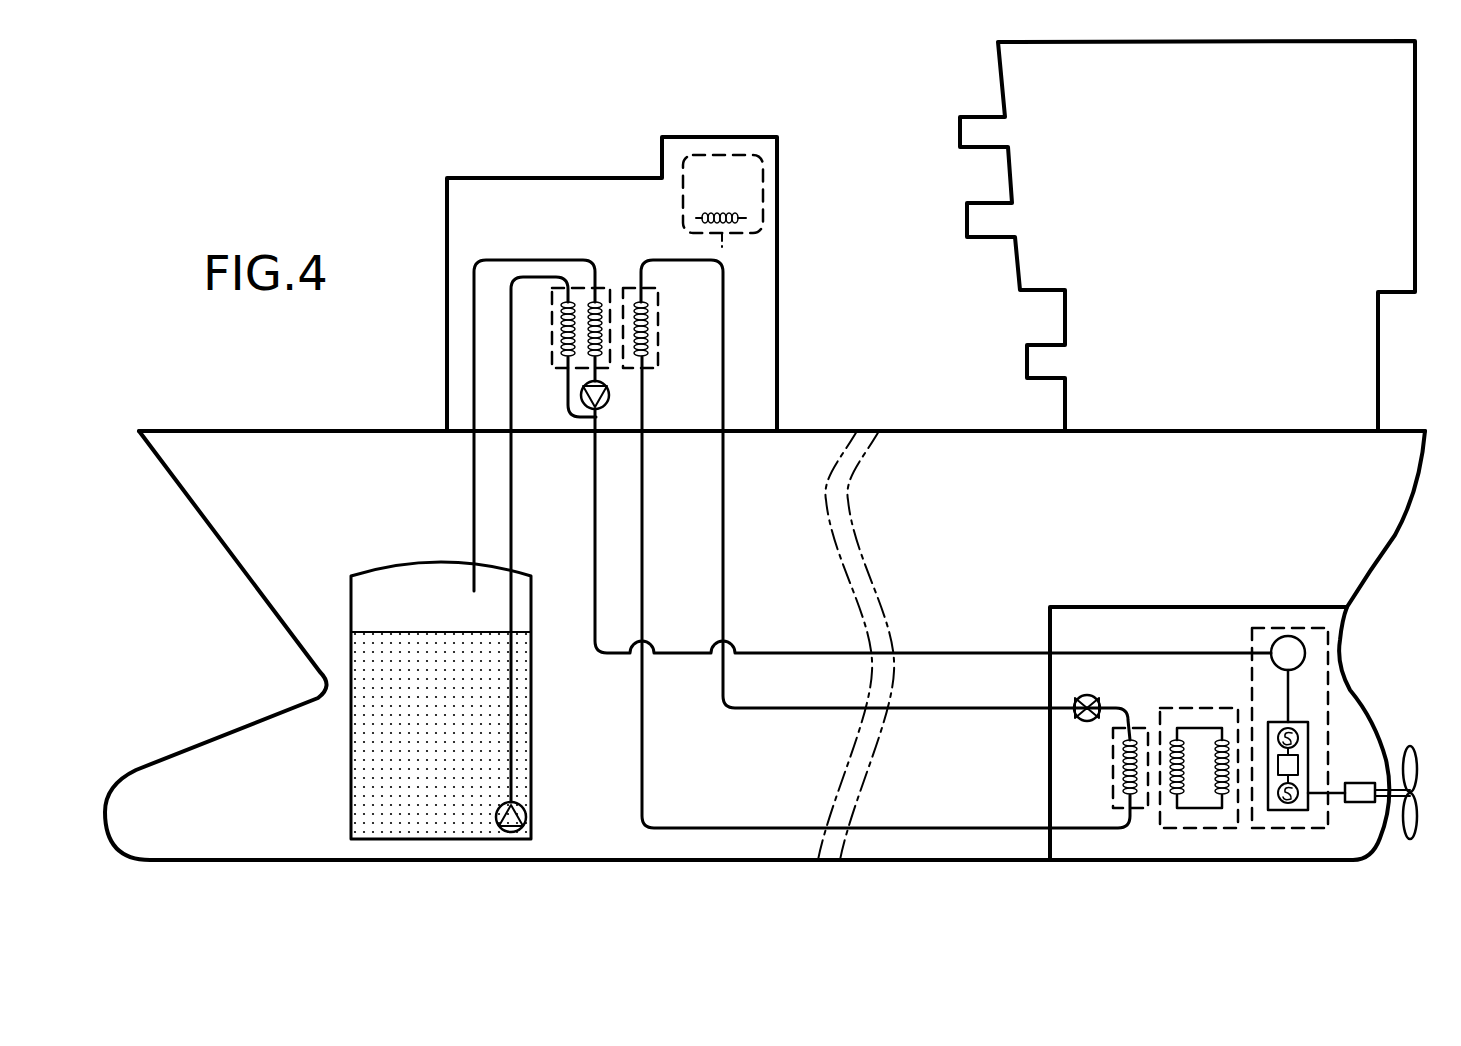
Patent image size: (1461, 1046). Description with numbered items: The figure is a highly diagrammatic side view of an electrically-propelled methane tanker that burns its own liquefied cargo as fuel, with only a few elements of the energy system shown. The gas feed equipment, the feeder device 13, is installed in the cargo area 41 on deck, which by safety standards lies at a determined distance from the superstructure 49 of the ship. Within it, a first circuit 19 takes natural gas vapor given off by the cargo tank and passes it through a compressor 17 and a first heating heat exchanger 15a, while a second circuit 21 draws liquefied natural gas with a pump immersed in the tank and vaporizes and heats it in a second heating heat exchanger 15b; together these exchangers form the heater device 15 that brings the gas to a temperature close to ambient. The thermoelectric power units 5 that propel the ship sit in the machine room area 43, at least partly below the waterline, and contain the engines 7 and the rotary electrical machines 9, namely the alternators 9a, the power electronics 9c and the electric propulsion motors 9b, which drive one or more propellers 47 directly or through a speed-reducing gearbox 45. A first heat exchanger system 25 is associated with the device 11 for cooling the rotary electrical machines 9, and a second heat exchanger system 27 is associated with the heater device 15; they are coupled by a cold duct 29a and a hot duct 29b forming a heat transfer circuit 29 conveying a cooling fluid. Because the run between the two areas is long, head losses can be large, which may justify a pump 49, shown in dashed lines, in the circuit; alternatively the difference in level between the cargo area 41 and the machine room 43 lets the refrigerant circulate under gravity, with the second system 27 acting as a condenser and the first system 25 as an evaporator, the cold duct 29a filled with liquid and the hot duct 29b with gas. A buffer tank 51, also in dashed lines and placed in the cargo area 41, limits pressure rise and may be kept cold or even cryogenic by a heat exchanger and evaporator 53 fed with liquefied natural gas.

The thermoelectric power unit 5 is at (1287, 731).
The engine 7 is at (1286, 645).
The rotary electrical machine 9 is at (1287, 711).
The alternator 9a is at (1300, 738).
The electric motor 9b is at (1279, 812).
The power electronics 9c is at (1299, 765).
The cooling device 11 is at (1185, 708).
The feeder device 13 is at (457, 352).
The heater device 15 is at (568, 318).
The first heating heat exchanger 15a is at (600, 305).
The second heating heat exchanger 15b is at (560, 329).
The compressor 17 is at (600, 410).
The first circuit 19 is at (480, 258).
The second circuit 21 is at (538, 277).
The first heat exchanger system 25 is at (1112, 758).
The second heat exchanger system 27 is at (660, 322).
The heat transfer circuit 29 is at (725, 565).
The cold duct 29a is at (742, 828).
The hot duct 29b is at (656, 260).
The cargo area 41 is at (442, 213).
The machine room area 43 is at (1147, 606).
The speed-reducing gearbox 45 is at (1356, 803).
The propeller 47 is at (1412, 760).
The superstructure / pump 49 is at (988, 86).
The buffer tank 51 is at (702, 155).
The heat exchanger and evaporator 53 is at (733, 214).